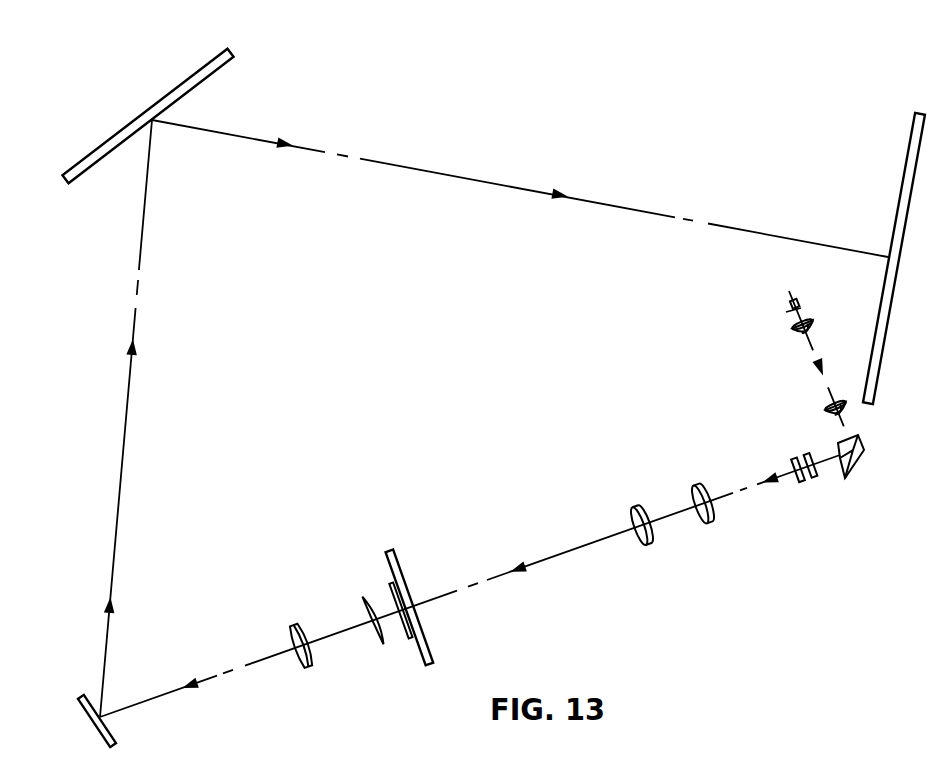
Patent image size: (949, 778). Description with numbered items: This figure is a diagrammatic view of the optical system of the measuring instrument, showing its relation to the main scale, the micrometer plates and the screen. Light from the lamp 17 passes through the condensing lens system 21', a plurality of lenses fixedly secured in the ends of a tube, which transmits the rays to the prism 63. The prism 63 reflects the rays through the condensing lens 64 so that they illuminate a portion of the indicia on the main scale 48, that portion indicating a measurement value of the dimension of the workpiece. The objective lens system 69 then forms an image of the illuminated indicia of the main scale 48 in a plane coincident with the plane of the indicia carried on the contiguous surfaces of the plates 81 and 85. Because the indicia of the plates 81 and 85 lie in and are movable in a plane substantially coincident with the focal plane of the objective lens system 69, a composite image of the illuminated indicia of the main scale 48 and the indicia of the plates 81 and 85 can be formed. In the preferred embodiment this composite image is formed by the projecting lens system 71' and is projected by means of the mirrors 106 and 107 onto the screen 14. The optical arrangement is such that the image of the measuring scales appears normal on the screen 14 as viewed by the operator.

The mirror 107 is at (122, 138).
The screen 14 is at (873, 375).
The lamp 17 is at (797, 298).
The condensing lens system 21' is at (802, 371).
The prism 63 is at (868, 445).
The main scale 48 is at (807, 477).
The condensing lens 64 is at (815, 475).
The objective lens system 69 is at (708, 473).
The projecting system 71' is at (329, 612).
The plate 81 is at (427, 642).
The plate 85 is at (408, 635).
The mirror 106 is at (110, 735).